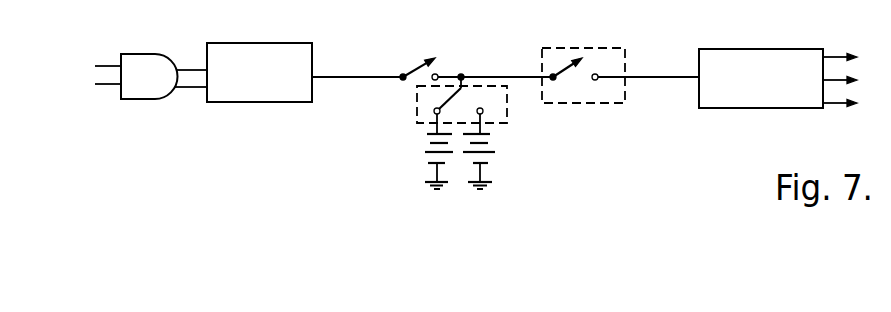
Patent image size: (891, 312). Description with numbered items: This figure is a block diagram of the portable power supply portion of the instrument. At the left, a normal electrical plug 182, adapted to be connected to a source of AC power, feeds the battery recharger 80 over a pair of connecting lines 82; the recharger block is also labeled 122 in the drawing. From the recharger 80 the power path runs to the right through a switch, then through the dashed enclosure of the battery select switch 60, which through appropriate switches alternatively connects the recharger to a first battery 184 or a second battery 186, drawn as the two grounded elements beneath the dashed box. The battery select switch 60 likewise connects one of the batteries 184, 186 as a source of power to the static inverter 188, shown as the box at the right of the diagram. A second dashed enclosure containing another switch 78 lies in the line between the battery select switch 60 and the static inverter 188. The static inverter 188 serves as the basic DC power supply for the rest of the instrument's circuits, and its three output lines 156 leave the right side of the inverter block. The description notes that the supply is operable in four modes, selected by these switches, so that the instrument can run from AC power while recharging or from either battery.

The electrical plug 182 is at (156, 61).
The output lines of AND gate 82 is at (195, 82).
The circuit block 122 is at (259, 51).
The battery recharger 80 is at (305, 63).
The battery select switch 60 is at (415, 115).
The first battery 184 is at (423, 152).
The second battery 186 is at (497, 152).
The switch 78 is at (625, 45).
The static inverter 188 is at (699, 108).
The inverter output lines 156 is at (849, 53).